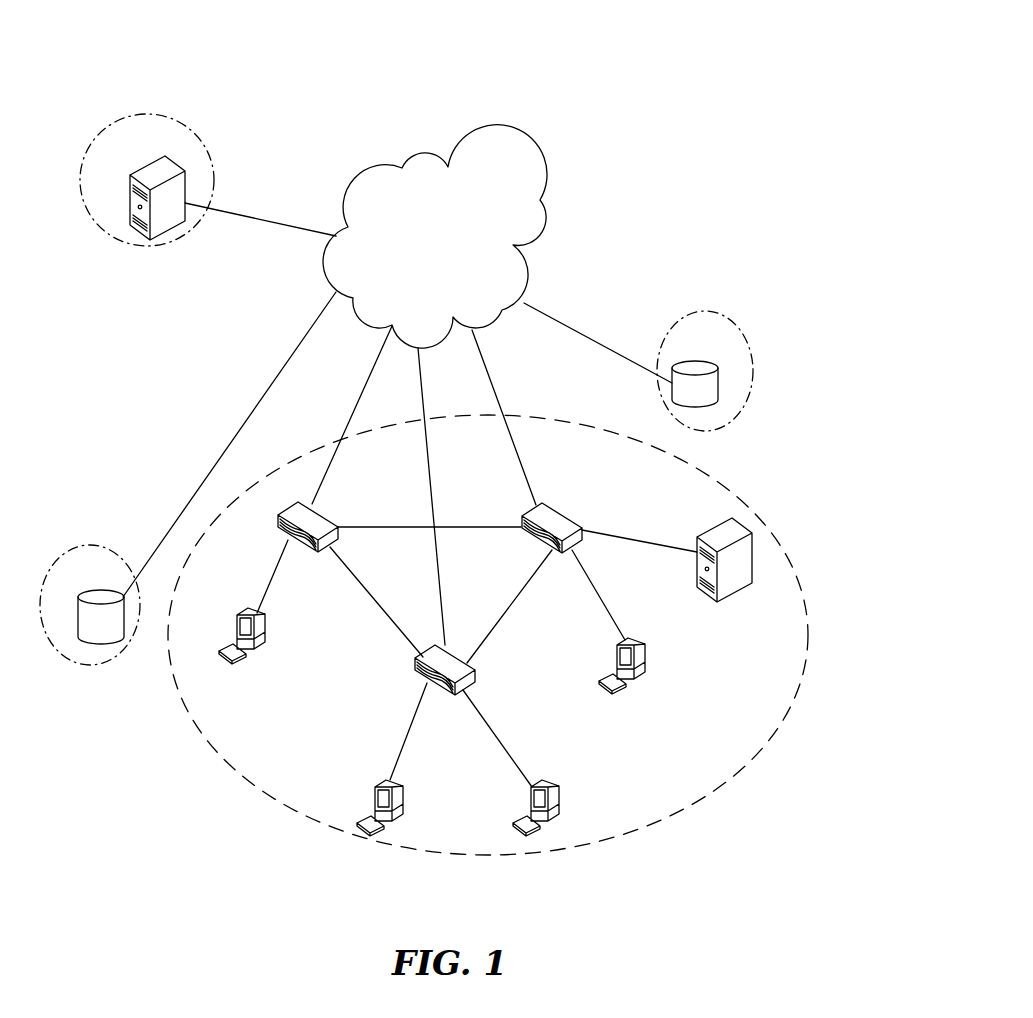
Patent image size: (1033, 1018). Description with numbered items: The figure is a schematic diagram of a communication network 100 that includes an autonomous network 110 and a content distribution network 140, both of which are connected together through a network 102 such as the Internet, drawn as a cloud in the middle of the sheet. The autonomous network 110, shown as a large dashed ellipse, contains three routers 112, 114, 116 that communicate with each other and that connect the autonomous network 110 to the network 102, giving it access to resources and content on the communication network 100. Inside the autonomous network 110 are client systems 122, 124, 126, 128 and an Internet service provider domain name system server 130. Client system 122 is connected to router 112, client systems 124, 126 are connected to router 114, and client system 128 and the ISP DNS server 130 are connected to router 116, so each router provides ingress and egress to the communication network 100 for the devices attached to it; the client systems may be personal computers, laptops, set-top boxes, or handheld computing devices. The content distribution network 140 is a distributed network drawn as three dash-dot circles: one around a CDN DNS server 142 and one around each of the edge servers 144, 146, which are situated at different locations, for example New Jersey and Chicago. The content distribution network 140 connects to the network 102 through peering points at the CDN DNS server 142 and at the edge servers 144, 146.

The communication network 100 is at (707, 62).
The network 102 is at (522, 152).
The autonomous network 110 is at (720, 479).
The router 112 is at (330, 511).
The router 114 is at (414, 661).
The router 116 is at (545, 504).
The client system 122 is at (240, 612).
The client system 124 is at (385, 782).
The client system 126 is at (545, 782).
The client system 128 is at (632, 642).
The Internet service provider domain name system server 130 is at (718, 538).
The content distribution network 140 is at (197, 122).
The content distribution network domain name system server 142 is at (148, 164).
The edge server 144 is at (100, 591).
The edge server 146 is at (697, 362).